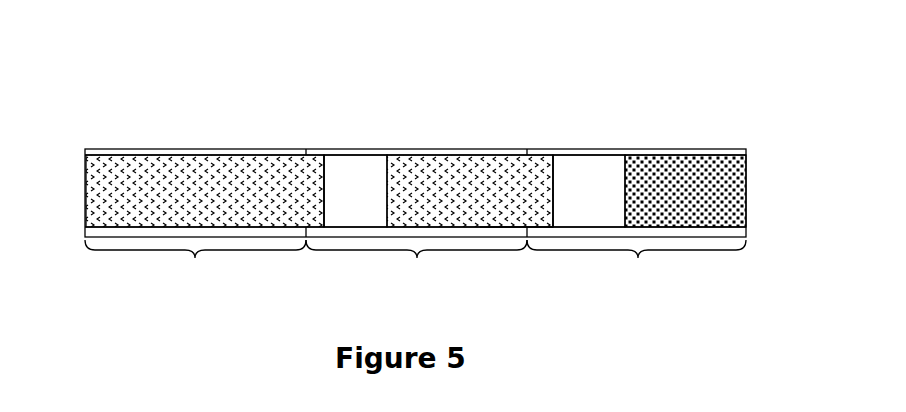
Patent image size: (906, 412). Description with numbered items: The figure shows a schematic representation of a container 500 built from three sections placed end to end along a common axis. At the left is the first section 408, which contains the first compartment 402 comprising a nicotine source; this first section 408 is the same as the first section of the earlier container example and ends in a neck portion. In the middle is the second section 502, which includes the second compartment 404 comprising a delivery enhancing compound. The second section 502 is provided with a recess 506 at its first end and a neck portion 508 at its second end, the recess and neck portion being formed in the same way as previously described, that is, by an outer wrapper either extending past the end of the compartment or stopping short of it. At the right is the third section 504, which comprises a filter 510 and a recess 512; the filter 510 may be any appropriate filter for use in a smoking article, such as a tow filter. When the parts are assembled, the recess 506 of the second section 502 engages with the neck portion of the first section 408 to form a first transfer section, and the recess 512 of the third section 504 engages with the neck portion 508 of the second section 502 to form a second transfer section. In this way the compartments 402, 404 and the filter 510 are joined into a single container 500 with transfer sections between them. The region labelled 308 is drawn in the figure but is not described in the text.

The container 500 is at (415, 118).
The first compartment 402 is at (198, 152).
The recess 506 is at (355, 139).
The second compartment 404 is at (470, 139).
The sensing region 308 is at (521, 139).
The neck portion 508 is at (415, 80).
The recess 512 is at (602, 140).
The filter 510 is at (685, 140).
The first section 408 is at (195, 268).
The second section 502 is at (416, 269).
The third section 504 is at (636, 269).